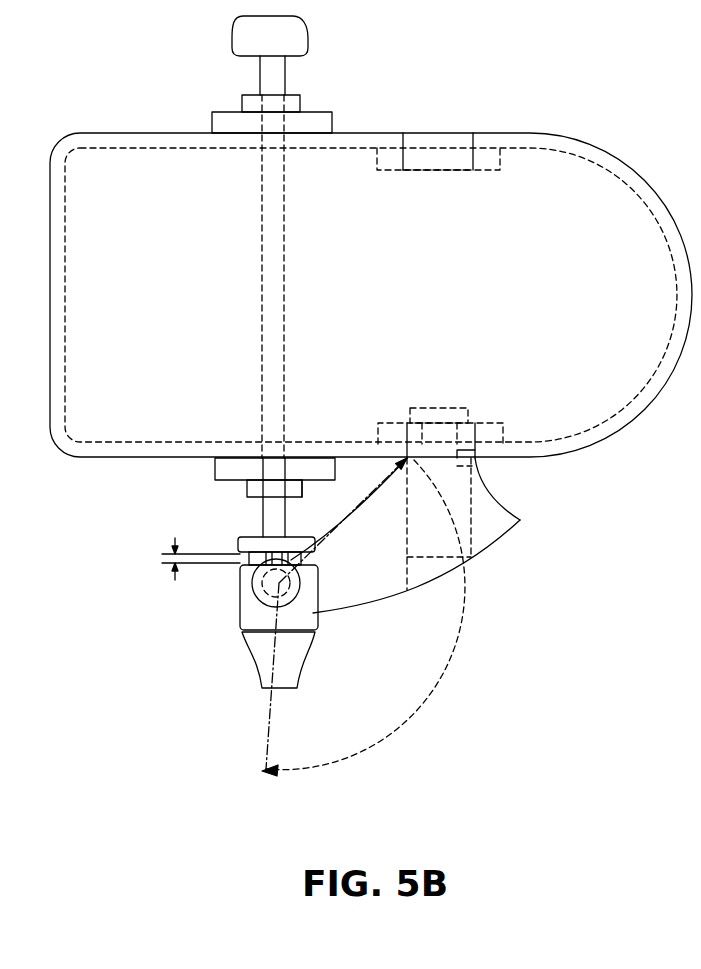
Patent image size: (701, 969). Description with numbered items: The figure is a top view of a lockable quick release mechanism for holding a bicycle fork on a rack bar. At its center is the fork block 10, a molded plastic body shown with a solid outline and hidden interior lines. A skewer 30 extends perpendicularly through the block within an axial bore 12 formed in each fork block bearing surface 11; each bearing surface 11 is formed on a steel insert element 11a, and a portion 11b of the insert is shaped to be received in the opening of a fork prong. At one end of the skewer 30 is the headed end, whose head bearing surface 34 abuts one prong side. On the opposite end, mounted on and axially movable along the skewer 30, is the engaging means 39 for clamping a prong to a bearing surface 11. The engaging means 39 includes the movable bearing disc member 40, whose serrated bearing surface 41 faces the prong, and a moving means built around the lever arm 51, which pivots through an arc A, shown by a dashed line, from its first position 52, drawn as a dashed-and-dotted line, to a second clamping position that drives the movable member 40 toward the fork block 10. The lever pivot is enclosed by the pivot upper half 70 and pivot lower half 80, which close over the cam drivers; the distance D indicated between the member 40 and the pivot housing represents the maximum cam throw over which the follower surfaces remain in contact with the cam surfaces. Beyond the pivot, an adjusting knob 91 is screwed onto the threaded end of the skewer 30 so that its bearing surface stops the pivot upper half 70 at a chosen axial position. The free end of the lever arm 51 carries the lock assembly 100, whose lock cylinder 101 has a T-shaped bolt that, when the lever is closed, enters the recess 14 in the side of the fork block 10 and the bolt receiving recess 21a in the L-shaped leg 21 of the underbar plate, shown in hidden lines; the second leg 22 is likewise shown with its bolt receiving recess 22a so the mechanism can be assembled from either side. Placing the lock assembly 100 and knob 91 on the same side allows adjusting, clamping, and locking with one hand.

The fork block 10 is at (630, 427).
The fork block bearing surface 11 is at (333, 114).
The insert element 11a is at (213, 465).
The portion of insert element 11b is at (303, 490).
The axial bore 12 is at (257, 133).
The recess 14 is at (440, 133).
The L-shaped leg 21 is at (493, 423).
The bolt receiving recess 21a is at (407, 423).
The leg 22 is at (486, 170).
The bolt receiving recess 22a is at (418, 170).
The skewer 30 is at (273, 299).
The head bearing surface 34 is at (304, 58).
The engaging means 39 is at (140, 500).
The movable bearing disc member 40 is at (240, 545).
The bearing surface 41 is at (250, 557).
The lever arm 51 is at (361, 590).
The first position 52 is at (267, 735).
The pivot upper half 70 is at (240, 613).
The pivot lower half 80 is at (240, 578).
The adjusting knob 91 is at (258, 667).
The lock assembly 100 is at (458, 492).
The lock cylinder 101 is at (445, 408).
The arc A is at (447, 657).
The distance D is at (195, 567).